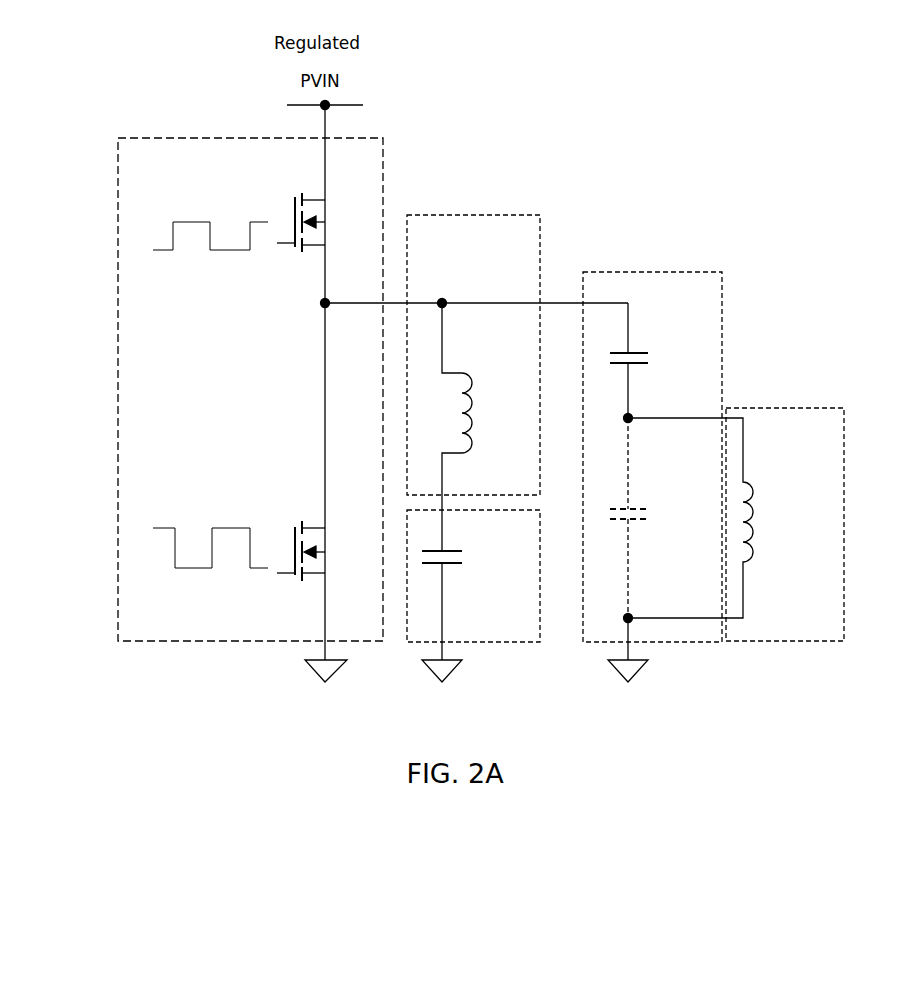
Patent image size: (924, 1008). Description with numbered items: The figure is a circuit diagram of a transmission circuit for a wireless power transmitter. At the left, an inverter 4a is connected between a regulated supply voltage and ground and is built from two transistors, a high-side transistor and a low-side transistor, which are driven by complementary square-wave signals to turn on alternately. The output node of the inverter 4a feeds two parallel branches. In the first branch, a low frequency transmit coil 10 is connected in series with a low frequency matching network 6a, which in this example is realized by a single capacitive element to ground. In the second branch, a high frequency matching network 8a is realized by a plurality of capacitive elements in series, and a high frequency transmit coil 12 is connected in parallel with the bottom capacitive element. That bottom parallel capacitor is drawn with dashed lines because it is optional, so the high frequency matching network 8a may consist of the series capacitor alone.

The inverter 4a is at (125, 133).
The low frequency transmit coil 10 is at (497, 213).
The low frequency matching network 6a is at (410, 542).
The high frequency matching network 8a is at (688, 270).
The high frequency transmit coil 12 is at (830, 407).